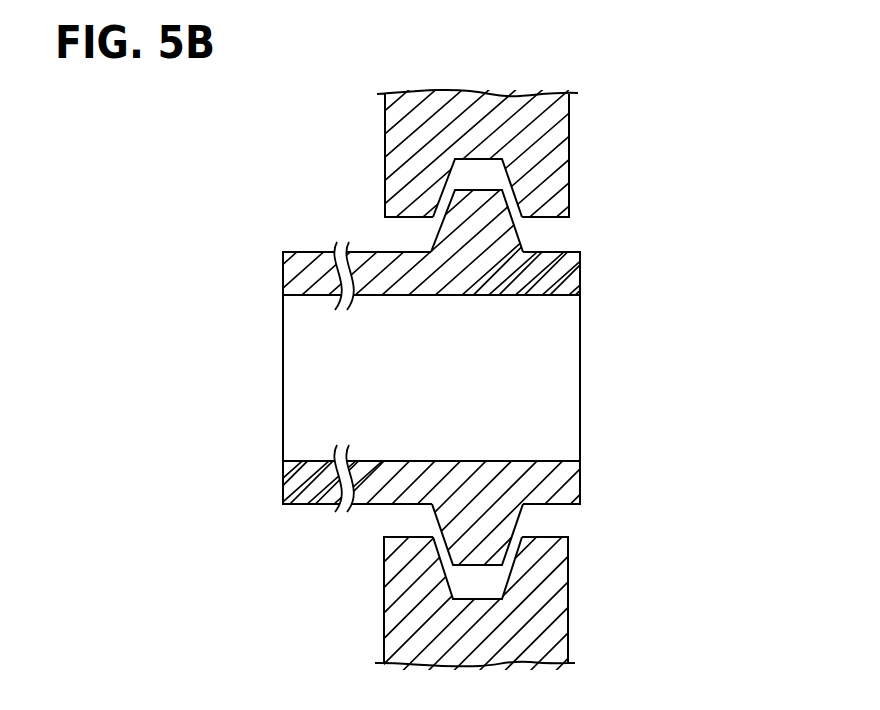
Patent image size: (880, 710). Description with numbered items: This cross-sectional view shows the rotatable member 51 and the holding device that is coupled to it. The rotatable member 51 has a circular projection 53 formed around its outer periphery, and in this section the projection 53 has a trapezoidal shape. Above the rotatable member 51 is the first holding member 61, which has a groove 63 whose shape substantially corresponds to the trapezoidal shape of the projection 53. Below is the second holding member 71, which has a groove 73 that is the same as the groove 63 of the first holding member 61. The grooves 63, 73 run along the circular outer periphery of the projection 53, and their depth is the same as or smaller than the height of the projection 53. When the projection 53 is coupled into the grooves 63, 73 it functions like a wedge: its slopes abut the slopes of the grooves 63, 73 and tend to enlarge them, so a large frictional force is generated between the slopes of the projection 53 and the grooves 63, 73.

The rotatable member 51 is at (562, 277).
The projection 53 is at (497, 242).
The first holding member 61 is at (558, 133).
The groove 63 is at (510, 186).
The second holding member 71 is at (548, 612).
The groove 73 is at (503, 579).